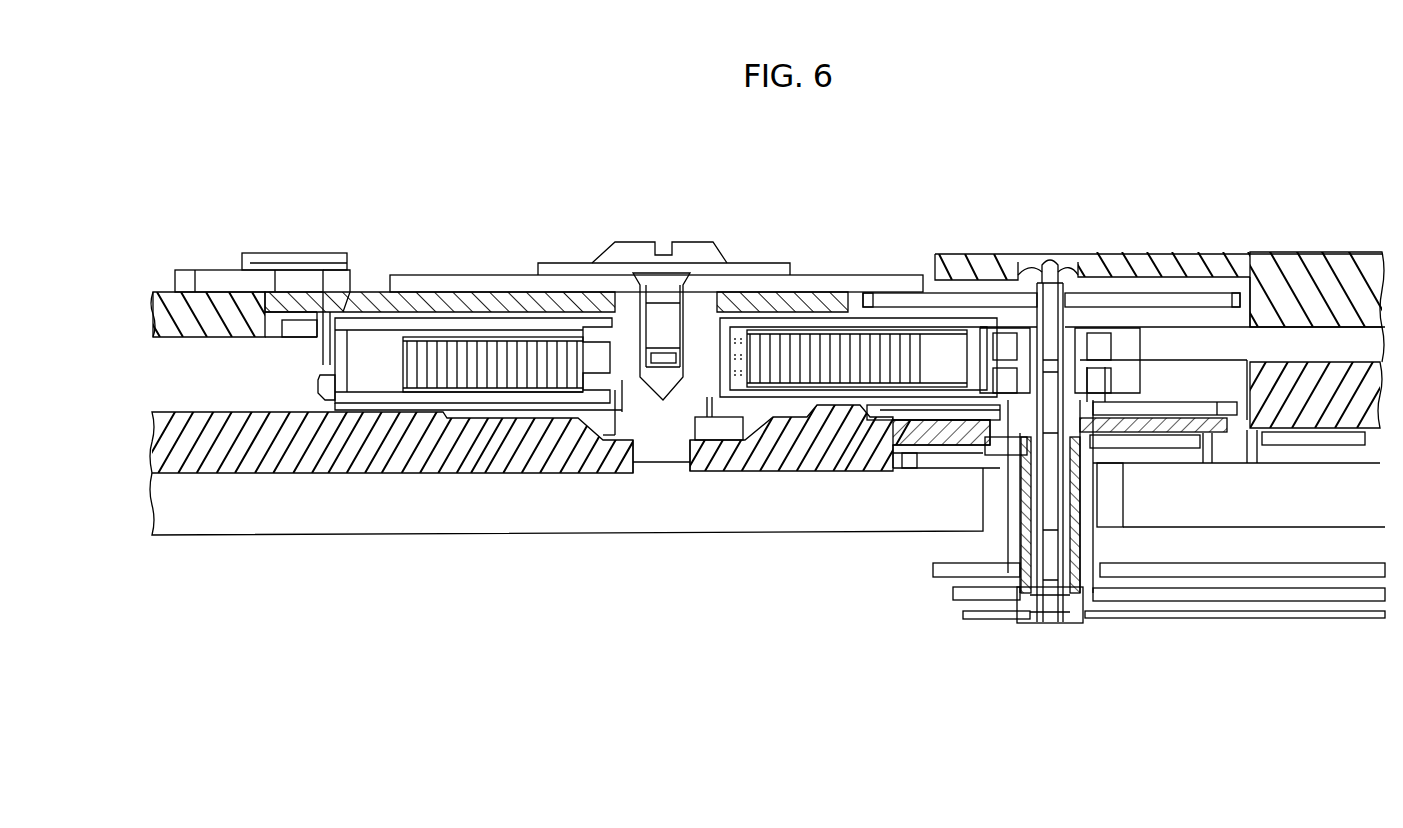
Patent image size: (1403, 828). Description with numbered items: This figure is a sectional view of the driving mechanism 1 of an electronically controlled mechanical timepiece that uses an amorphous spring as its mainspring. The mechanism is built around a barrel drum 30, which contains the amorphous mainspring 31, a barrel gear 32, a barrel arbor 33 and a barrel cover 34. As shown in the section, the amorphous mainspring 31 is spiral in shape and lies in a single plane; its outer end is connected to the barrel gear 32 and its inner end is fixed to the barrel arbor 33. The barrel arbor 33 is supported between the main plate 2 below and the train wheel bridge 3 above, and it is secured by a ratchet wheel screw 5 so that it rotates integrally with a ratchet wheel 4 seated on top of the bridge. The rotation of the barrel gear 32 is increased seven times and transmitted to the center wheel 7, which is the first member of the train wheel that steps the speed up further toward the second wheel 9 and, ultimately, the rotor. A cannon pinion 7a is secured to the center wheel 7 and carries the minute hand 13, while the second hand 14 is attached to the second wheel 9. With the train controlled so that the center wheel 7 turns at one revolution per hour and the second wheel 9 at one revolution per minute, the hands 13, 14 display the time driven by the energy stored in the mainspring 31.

The driving mechanism 1 is at (222, 122).
The main plate 2 is at (373, 463).
The train wheel bridge 3 is at (518, 293).
The ratchet wheel 4 is at (838, 275).
The ratchet wheel screw 5 is at (695, 248).
The center wheel 7 is at (1080, 388).
The cannon pinion 7a is at (1012, 598).
The second wheel 9 is at (1105, 295).
The minute hand 13 is at (1163, 593).
The second hand 14 is at (1252, 618).
The barrel drum 30 is at (727, 420).
The amorphous mainspring 31 is at (483, 340).
The barrel gear 32 is at (323, 380).
The barrel arbor 33 is at (660, 450).
The barrel cover 34 is at (380, 323).